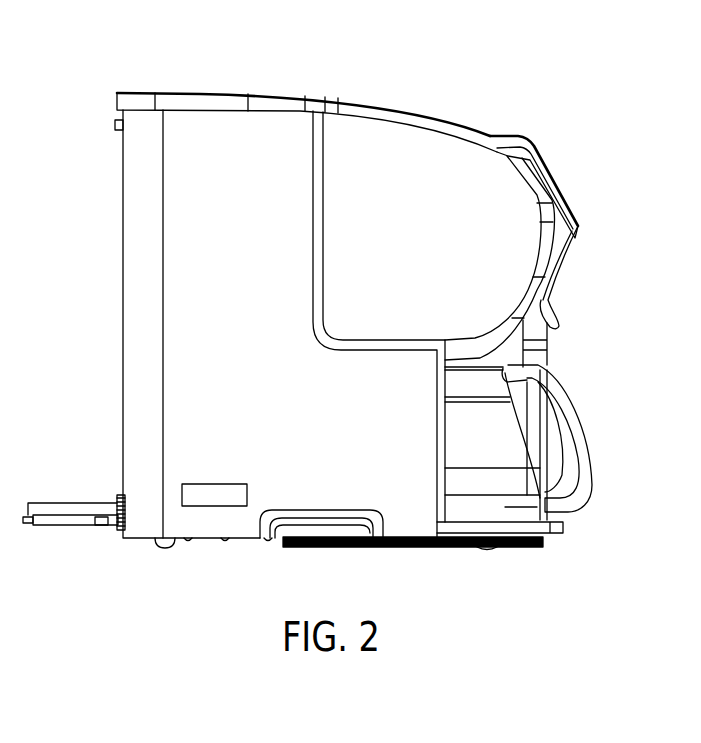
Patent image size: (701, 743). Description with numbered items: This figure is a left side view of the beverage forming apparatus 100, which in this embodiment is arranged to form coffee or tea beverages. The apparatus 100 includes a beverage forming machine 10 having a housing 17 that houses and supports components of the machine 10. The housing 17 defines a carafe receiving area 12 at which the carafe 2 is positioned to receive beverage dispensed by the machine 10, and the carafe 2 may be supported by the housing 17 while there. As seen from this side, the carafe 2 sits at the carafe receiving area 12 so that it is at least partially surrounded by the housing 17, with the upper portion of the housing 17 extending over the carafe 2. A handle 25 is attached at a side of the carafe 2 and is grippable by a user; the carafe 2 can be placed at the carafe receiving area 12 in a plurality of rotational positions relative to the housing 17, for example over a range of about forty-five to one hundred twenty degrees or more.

The beverage forming apparatus 100 is at (88, 72).
The beverage forming machine 10 is at (340, 70).
The housing 17 is at (140, 312).
The carafe 2 is at (507, 425).
The handle 25 is at (578, 440).
The carafe receiving area 12 is at (573, 522).